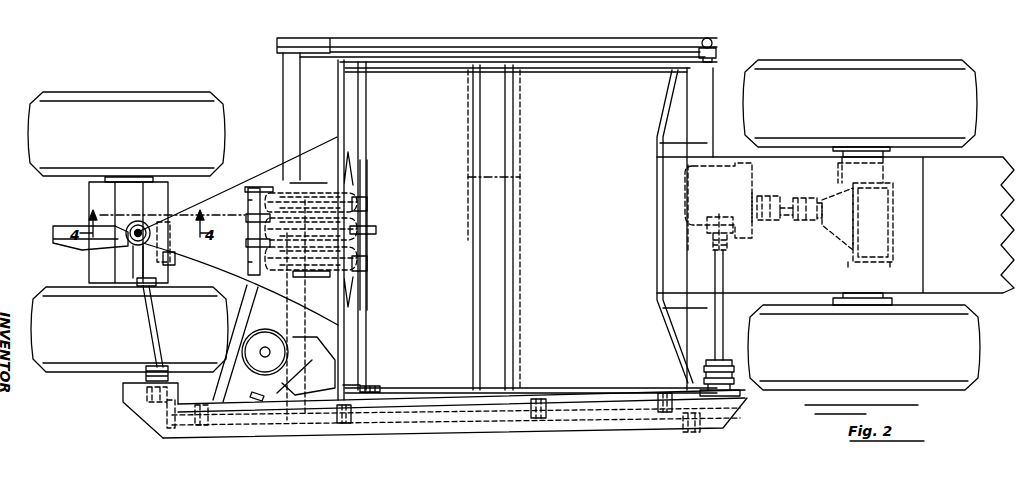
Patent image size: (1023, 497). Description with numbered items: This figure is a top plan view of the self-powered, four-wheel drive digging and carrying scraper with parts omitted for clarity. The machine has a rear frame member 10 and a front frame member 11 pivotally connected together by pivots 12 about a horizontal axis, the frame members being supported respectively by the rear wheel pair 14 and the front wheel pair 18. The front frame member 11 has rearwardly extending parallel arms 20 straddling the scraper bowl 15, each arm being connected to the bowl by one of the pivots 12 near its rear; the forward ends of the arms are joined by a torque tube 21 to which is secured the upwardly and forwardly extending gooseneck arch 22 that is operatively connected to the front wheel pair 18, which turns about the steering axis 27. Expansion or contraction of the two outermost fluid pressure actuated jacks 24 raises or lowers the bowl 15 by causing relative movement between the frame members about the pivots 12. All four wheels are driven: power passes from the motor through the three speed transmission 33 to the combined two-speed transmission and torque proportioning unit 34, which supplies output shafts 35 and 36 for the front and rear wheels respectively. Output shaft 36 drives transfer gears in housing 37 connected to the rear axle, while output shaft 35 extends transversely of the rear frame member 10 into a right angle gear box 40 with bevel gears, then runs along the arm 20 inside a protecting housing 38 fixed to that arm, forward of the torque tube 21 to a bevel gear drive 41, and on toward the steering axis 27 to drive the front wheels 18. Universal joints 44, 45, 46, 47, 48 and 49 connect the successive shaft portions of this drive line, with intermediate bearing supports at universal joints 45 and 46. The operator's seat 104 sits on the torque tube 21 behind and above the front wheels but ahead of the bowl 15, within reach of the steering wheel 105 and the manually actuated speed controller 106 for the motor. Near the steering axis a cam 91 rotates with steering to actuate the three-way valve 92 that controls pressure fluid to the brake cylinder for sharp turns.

The rear frame member 10 is at (730, 70).
The front frame member 11 is at (243, 177).
The pivot 12 is at (712, 40).
The rear wheel pair 14 is at (861, 225).
The scraper bowl 15 is at (787, 225).
The front wheel pair 18 is at (128, 232).
The arm 20 is at (493, 40).
The torque tube 21 is at (300, 80).
The gooseneck arch 22 is at (238, 231).
The fluid pressure actuated jack 24 is at (372, 243).
The steering axis 27 is at (128, 242).
The three speed transmission 33 is at (810, 174).
The combined two-speed transmission and torque proportioning unit 34 is at (729, 163).
The output shaft 35 is at (728, 268).
The output shaft 36 is at (794, 219).
The transfer gear housing 37 is at (893, 200).
The protecting housing 38 is at (402, 398).
The right angle gear box 40 is at (737, 410).
The bevel gear drive 41 is at (170, 402).
The universal joint 44 is at (660, 396).
The universal joint 45 is at (537, 399).
The universal joint 46 is at (348, 432).
The universal joint 47 is at (208, 410).
The universal joint 48 is at (167, 370).
The universal joint 49 is at (140, 286).
The cam 91 is at (138, 221).
The three-way valve 92 is at (172, 263).
The seat 104 is at (323, 340).
The steering wheel 105 is at (262, 331).
The speed controller 106 is at (300, 391).